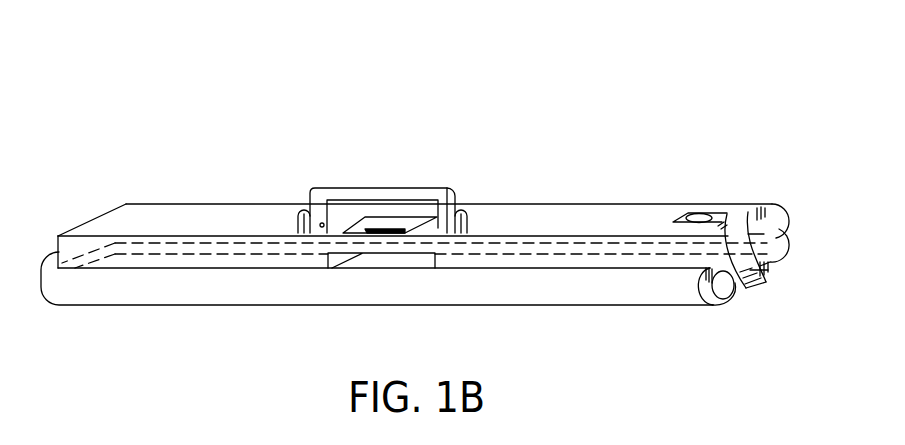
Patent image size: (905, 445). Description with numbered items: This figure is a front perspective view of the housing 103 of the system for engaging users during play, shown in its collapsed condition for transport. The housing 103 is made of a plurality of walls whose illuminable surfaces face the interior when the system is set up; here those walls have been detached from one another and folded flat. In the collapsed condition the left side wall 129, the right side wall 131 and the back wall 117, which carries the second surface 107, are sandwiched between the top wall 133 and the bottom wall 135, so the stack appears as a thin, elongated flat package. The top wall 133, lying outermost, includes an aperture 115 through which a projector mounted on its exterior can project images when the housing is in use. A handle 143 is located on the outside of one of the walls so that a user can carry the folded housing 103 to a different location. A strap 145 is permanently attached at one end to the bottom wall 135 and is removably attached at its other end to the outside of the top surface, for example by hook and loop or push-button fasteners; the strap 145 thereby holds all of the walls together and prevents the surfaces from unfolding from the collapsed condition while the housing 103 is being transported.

The housing 103 is at (129, 98).
The second surface 107 is at (403, 263).
The aperture 115 is at (383, 226).
The back wall 117 is at (177, 263).
The left side wall 129 is at (243, 263).
The right side wall 131 is at (598, 263).
The top wall 133 is at (640, 213).
The bottom wall 135 is at (710, 294).
The handle 143 is at (422, 187).
The strap 145 is at (725, 217).